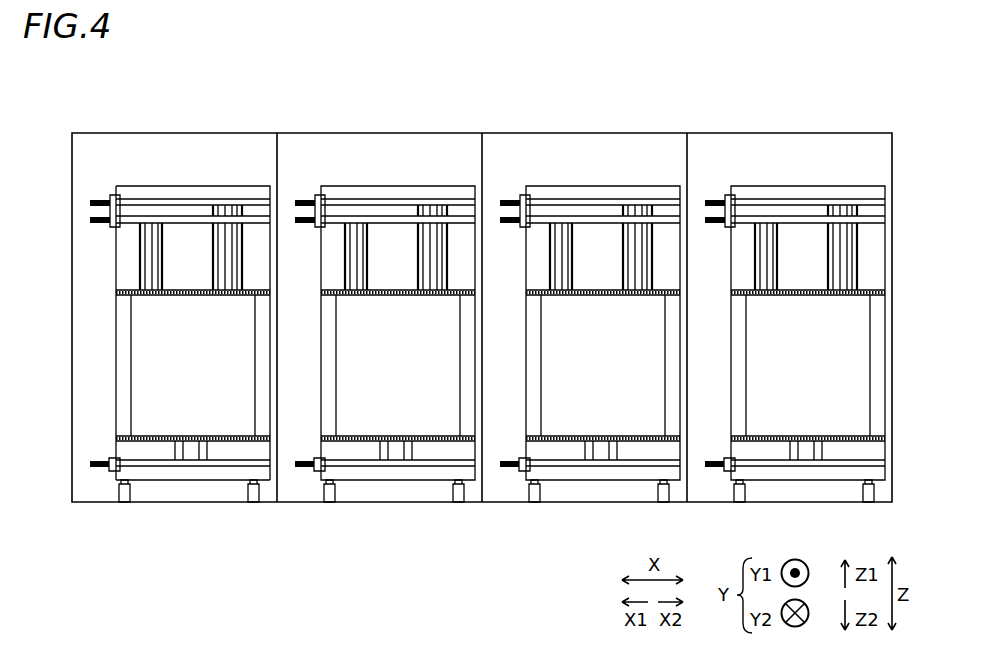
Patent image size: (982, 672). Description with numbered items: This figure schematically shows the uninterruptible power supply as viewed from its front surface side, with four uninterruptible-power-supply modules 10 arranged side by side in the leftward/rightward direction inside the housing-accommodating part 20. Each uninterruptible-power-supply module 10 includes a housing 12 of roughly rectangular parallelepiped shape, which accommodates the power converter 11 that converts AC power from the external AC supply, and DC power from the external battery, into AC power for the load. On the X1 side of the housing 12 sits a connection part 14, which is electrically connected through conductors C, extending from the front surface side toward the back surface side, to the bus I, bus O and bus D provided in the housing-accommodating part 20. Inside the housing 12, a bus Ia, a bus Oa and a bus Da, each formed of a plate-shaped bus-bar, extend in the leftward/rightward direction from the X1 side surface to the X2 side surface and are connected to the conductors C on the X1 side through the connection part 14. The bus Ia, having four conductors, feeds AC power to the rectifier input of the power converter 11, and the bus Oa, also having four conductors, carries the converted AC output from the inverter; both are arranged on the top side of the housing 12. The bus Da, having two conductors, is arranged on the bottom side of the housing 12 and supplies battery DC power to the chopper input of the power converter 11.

The housing-accommodating part 20 is at (855, 129).
The uninterruptible-power-supply module 10 is at (460, 314).
The housing 12 is at (189, 163).
The connection part 14 is at (77, 344).
The power converter 11 is at (146, 365).
The conductor C is at (72, 345).
The bus Ia is at (193, 173).
The bus Oa is at (193, 189).
The bus Da is at (96, 470).